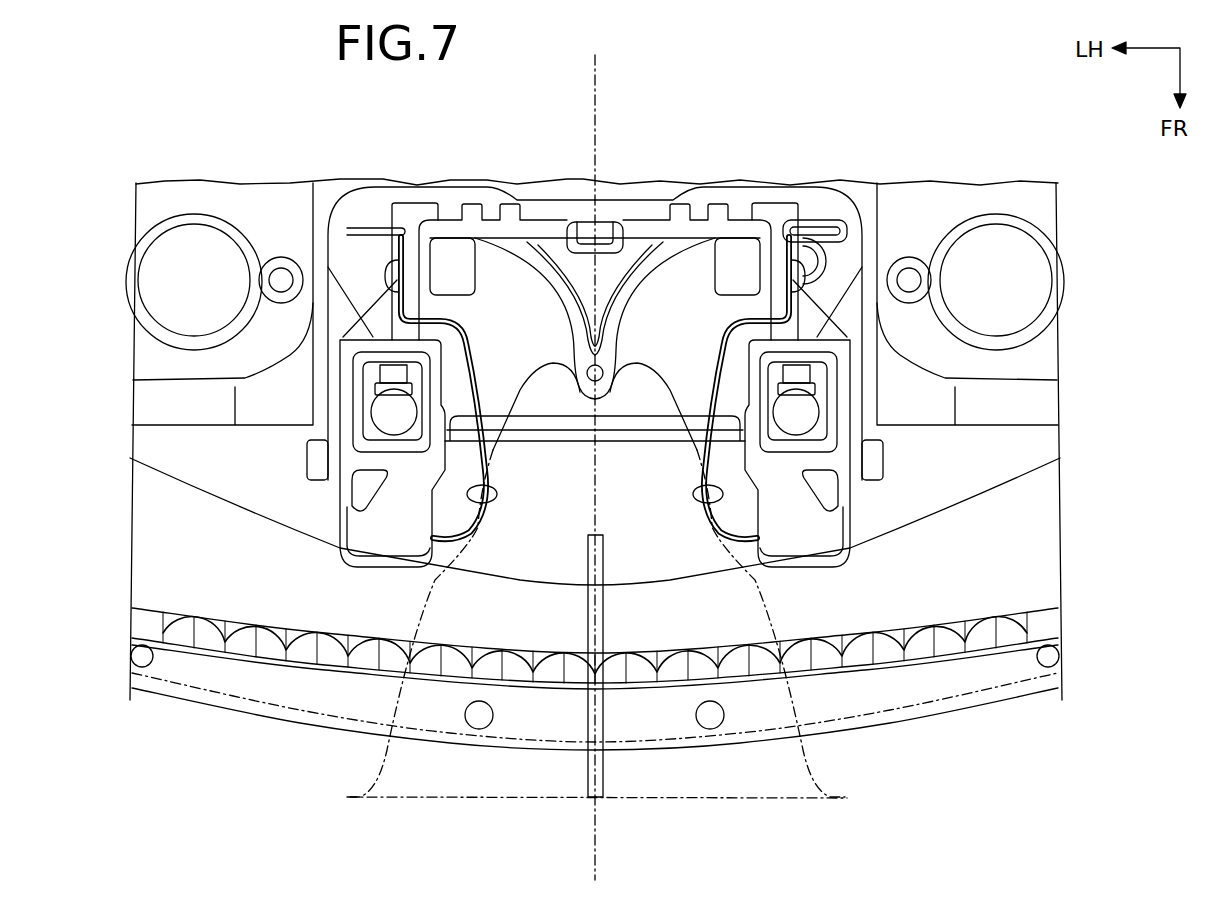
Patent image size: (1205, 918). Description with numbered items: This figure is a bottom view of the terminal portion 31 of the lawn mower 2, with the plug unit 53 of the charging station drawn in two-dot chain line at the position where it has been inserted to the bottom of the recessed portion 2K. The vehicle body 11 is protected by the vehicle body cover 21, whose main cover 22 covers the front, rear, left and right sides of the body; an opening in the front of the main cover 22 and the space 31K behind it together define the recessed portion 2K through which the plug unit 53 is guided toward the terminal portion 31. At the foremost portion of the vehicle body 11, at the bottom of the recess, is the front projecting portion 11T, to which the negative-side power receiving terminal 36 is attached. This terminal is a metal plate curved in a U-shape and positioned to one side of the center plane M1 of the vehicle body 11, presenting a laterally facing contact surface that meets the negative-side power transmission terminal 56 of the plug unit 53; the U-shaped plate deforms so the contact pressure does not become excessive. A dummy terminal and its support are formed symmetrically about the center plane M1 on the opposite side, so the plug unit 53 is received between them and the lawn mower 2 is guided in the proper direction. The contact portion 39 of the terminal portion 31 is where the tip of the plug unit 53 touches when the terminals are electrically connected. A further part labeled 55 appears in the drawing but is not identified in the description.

The lawn mower 2 is at (248, 129).
The vehicle body 11 is at (899, 189).
The front projecting portion 11T is at (477, 493).
The negative-side power receiving terminal 36 is at (470, 504).
The contact portion 39 is at (634, 370).
The vehicle body cover 21 is at (201, 682).
The main cover 22 is at (253, 672).
The terminal portion 31 is at (435, 660).
The plug unit 53 is at (420, 765).
The recessed portion 2K is at (531, 713).
The space 31K is at (553, 716).
The center rib 55 is at (600, 763).
The negative-side power transmission terminal 56 is at (718, 536).
The center plane M1 is at (594, 455).